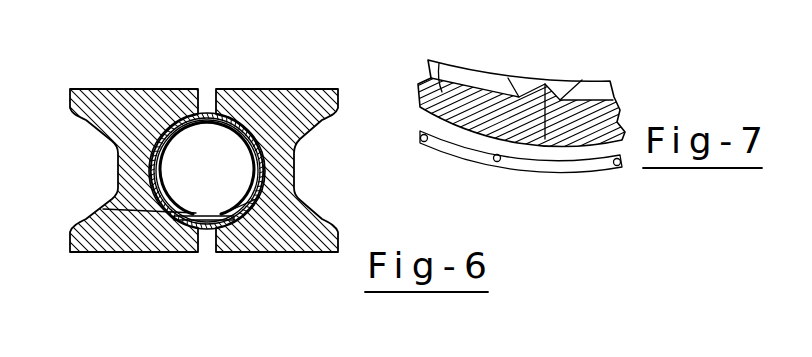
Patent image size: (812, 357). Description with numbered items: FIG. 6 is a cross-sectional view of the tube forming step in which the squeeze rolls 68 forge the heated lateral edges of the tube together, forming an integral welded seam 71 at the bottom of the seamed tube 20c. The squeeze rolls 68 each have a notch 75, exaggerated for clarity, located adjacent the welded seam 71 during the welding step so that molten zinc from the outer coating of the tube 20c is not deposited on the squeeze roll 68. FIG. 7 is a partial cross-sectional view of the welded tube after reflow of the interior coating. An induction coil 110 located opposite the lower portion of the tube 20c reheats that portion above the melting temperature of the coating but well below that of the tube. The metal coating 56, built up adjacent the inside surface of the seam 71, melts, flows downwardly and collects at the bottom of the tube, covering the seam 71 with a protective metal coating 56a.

In FIG. 6, the seamed tube 20c is at (118, 213).
In FIG. 7, the seamed tube 20c is at (428, 64).
In FIG. 6, the squeeze rolls 68 is at (280, 186).
In FIG. 6, the notch 75 is at (193, 221).
In FIG. 6, the seam 71 is at (206, 222).
In FIG. 7, the protective metal coating 56a is at (524, 92).
In FIG. 7, the metal coating 56 is at (590, 93).
In FIG. 7, the induction coil 110 is at (531, 192).